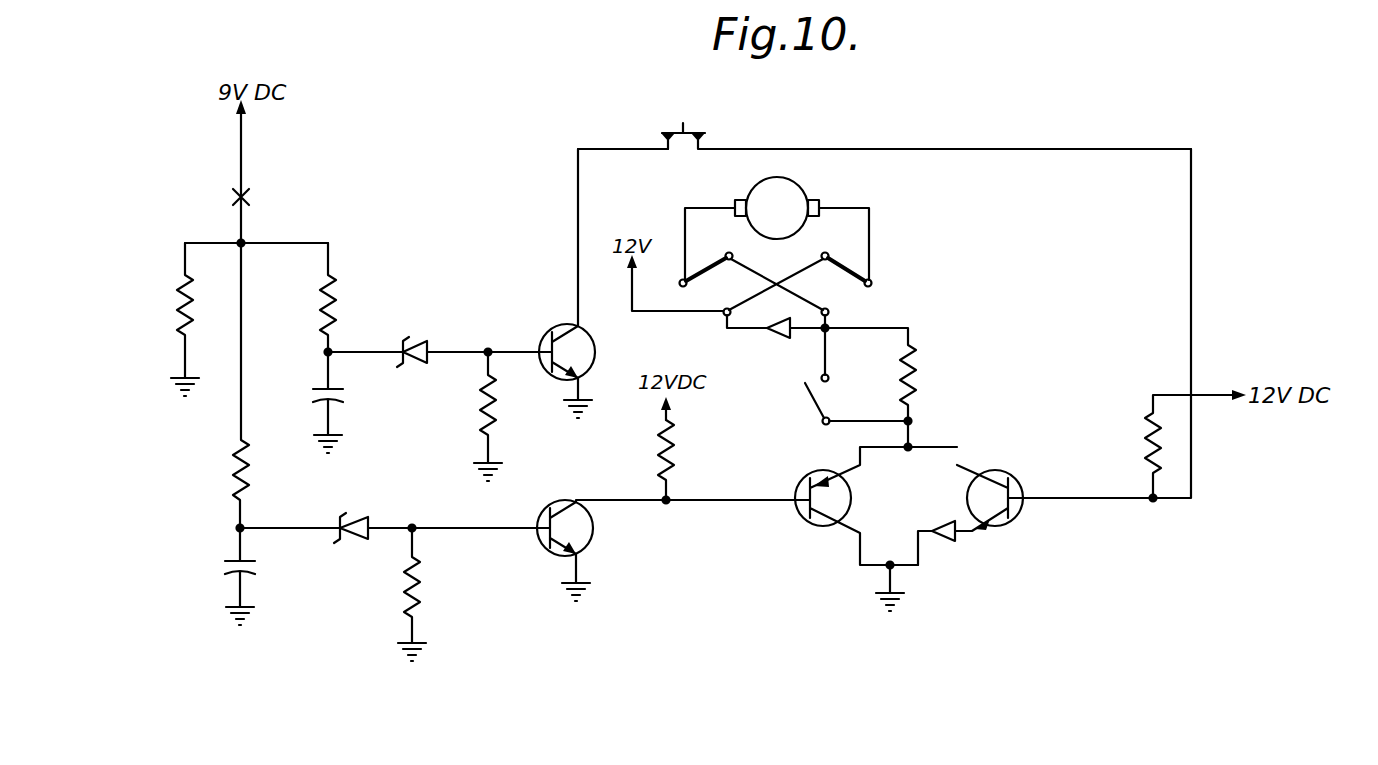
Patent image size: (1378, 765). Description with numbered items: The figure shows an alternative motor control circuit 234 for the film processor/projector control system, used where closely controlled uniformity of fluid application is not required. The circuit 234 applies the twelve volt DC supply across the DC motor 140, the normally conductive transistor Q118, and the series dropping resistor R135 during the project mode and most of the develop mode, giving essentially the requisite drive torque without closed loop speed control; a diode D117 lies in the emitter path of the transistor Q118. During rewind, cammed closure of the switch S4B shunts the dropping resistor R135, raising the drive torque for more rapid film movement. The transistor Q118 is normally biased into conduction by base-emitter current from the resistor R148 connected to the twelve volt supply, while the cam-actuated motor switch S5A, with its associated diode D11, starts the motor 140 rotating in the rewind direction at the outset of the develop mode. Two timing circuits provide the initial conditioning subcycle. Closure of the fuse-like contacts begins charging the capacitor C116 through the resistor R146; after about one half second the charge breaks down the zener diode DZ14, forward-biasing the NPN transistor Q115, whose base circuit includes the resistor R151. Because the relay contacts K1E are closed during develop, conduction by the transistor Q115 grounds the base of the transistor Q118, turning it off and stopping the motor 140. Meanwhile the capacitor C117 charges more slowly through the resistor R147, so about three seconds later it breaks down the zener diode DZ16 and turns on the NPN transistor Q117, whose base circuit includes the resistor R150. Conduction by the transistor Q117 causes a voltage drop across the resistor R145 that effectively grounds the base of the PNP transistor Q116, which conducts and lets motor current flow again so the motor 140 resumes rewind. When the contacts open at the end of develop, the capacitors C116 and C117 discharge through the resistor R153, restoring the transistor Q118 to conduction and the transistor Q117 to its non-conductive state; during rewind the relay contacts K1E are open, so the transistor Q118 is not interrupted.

The resistor R153 is at (153, 319).
The resistor R146 is at (297, 297).
The resistor R147 is at (271, 385).
The capacitor C116 is at (357, 402).
The capacitor C117 is at (268, 576).
The zener diode DZ14 is at (408, 334).
The zener diode DZ16 is at (326, 519).
The resistor R151 is at (514, 416).
The resistor R150 is at (439, 594).
The NPN transistor Q115 is at (571, 283).
The NPN transistor Q117 is at (611, 550).
The PNP transistor Q116 is at (873, 506).
The NPN transistor Q118 is at (1015, 498).
The motor control circuit 234 is at (549, 186).
The relay contacts K1E is at (924, 121).
The DC motor 140 is at (804, 189).
The motor switch S5A is at (776, 284).
The diode D11 is at (776, 345).
The switch S4B is at (856, 400).
The series dropping resistor R135 is at (899, 387).
The resistor R145 is at (695, 460).
The resistor R148 is at (1161, 444).
The diode D117 is at (949, 546).